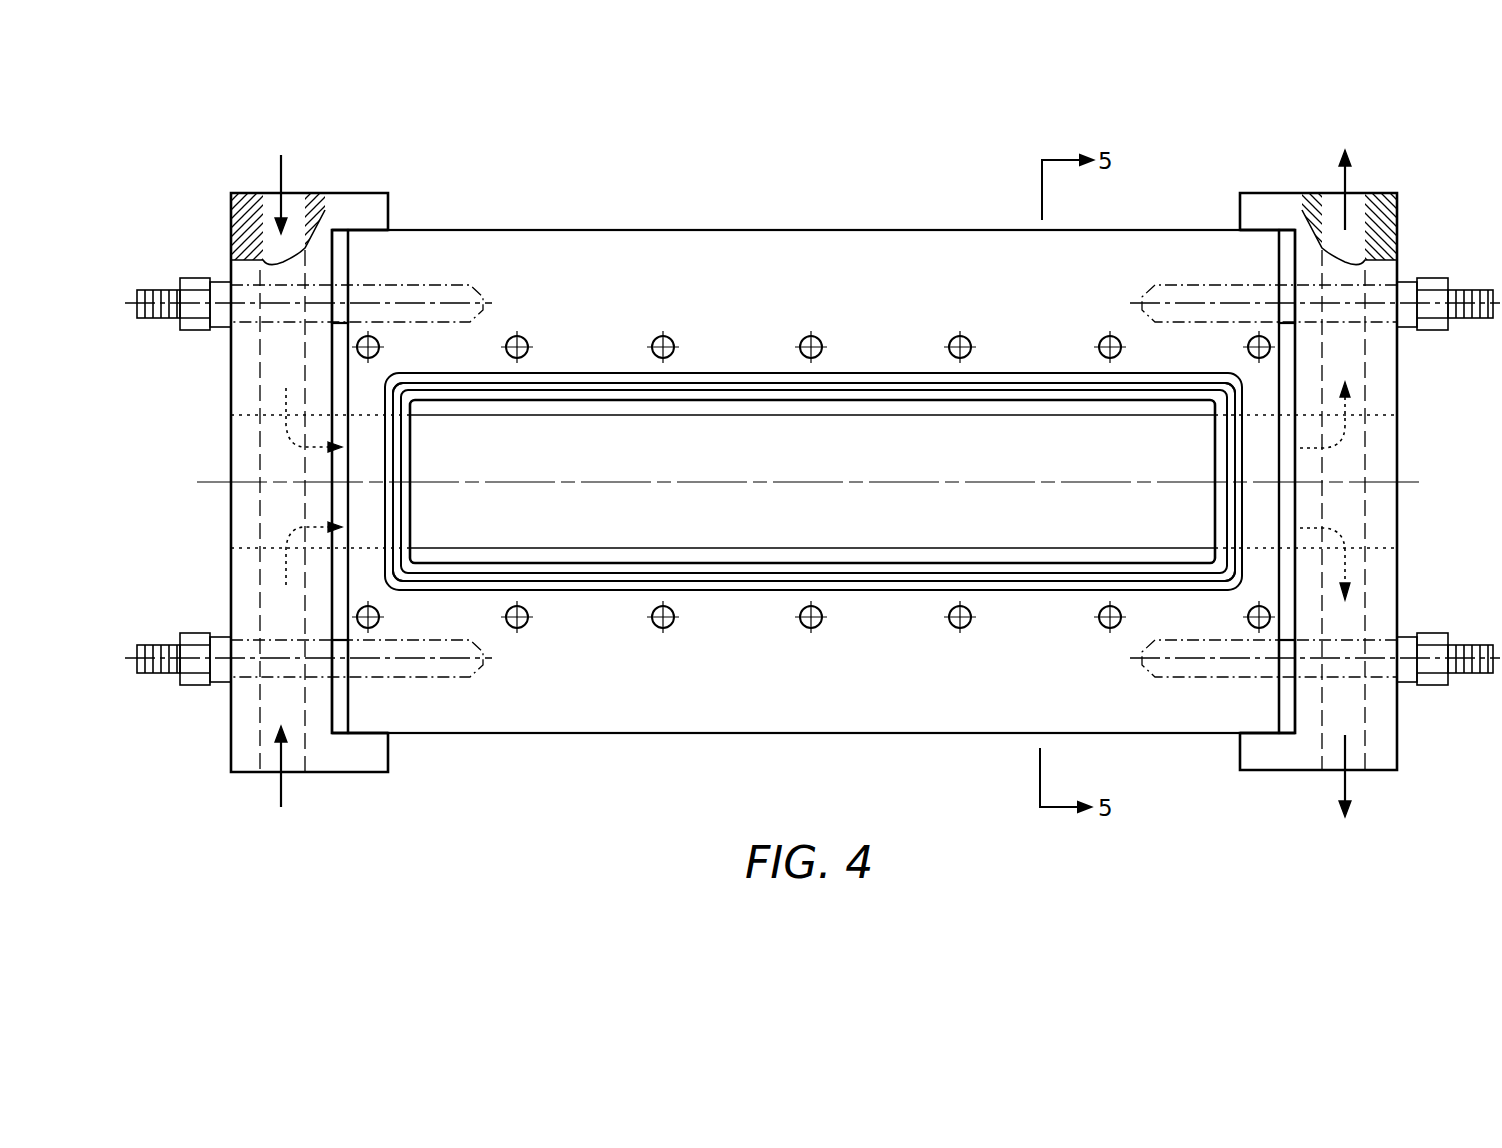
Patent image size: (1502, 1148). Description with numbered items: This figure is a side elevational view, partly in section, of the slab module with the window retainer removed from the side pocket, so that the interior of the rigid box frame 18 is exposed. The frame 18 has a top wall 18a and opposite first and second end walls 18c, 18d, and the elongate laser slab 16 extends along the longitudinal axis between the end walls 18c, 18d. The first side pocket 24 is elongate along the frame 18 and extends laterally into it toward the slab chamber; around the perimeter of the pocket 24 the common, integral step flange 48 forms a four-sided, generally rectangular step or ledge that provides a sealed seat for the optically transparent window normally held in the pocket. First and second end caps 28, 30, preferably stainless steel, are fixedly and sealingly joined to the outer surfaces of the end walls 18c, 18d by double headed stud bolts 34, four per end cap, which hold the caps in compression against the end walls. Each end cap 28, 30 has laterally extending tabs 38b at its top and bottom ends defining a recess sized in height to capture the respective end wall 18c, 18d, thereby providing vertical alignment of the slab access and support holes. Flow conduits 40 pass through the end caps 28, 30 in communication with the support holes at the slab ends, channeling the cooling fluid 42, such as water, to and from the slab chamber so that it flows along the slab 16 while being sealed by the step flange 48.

The laser slab 16 is at (786, 464).
The box frame 18 is at (634, 226).
The top wall 18a is at (797, 297).
The first end wall 18c is at (368, 452).
The second end wall 18d is at (1255, 452).
The first side pocket 24 is at (683, 563).
The first end cap 28 is at (226, 579).
The second end cap 30 is at (1402, 580).
The stud bolts 34 is at (196, 332).
The lateral tabs 38b is at (389, 210).
The flow conduits 40 is at (292, 192).
The cooling fluid 42 is at (277, 192).
The step flange 48 is at (409, 520).